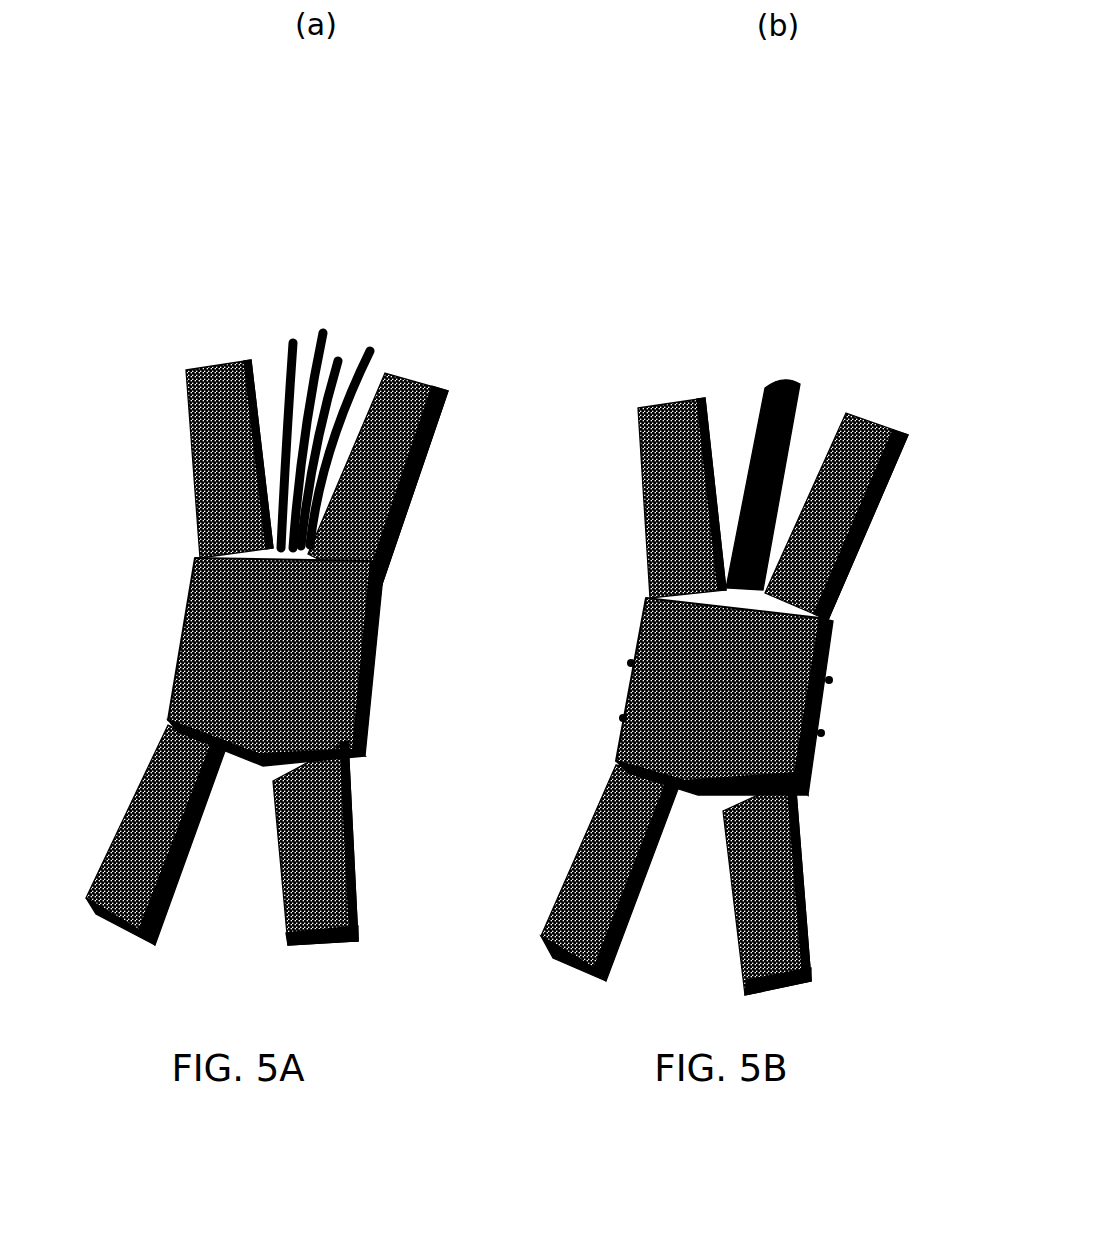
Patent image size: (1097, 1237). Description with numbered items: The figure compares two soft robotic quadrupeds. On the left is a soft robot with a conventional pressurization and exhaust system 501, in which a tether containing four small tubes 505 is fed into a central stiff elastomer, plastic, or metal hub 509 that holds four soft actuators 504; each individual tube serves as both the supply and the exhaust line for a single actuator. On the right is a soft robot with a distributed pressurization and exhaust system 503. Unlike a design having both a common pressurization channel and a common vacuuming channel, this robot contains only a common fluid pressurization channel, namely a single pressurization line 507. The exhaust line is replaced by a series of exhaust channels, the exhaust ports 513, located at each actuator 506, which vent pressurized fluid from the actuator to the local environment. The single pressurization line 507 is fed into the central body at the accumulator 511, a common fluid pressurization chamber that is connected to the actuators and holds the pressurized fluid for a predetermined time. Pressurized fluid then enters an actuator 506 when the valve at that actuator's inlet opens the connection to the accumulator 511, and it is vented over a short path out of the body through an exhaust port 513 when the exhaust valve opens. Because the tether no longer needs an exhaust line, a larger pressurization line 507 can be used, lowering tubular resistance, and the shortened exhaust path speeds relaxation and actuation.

In FIG. 5A, the conventional pressurization and exhaust system 501 is at (456, 264).
In FIG. 5B, the distributed pressurization and exhaust system 503 is at (635, 291).
In FIG. 5A, the soft actuators 504 is at (178, 427).
In FIG. 5A, the small tubes 505 is at (272, 312).
In FIG. 5B, the actuator 506 is at (550, 954).
In FIG. 5B, the single pressurization line 507 is at (779, 350).
In FIG. 5A, the central stiff elastomer, plastic, or metal hub 509 is at (390, 584).
In FIG. 5B, the accumulator 511 is at (594, 746).
In FIG. 5B, the exhaust ports 513 is at (840, 681).